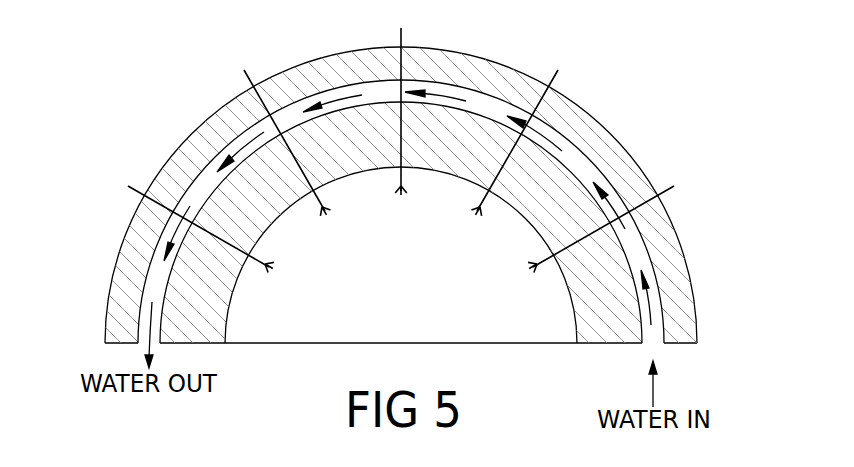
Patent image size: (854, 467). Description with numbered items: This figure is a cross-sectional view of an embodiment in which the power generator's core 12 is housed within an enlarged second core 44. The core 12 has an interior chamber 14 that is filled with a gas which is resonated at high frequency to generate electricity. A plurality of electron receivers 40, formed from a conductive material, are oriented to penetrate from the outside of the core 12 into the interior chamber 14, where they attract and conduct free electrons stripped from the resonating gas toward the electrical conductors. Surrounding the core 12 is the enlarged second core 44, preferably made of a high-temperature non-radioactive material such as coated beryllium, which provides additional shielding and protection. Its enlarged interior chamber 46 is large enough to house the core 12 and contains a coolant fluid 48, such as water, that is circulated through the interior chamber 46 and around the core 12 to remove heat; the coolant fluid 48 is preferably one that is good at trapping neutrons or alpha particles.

The core 12 is at (187, 286).
The interior chamber 14 is at (462, 305).
The electron receivers 40 is at (402, 38).
The enlarged second core 44 is at (680, 287).
The enlarged interior chamber 46 is at (582, 160).
The coolant fluid 48 is at (194, 187).